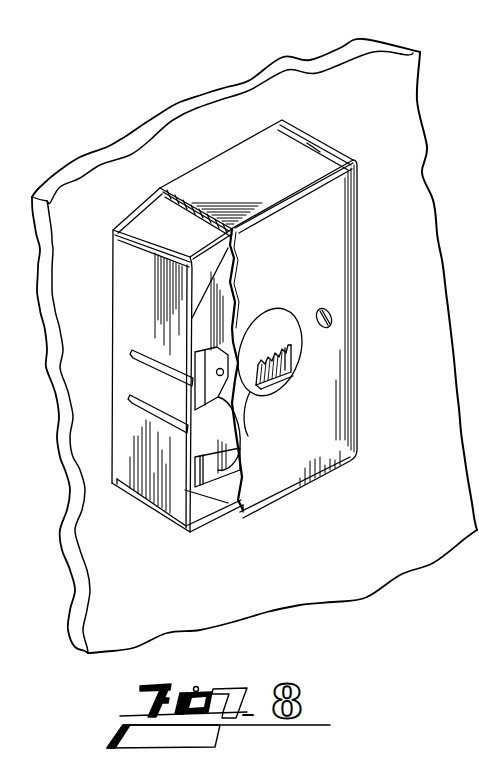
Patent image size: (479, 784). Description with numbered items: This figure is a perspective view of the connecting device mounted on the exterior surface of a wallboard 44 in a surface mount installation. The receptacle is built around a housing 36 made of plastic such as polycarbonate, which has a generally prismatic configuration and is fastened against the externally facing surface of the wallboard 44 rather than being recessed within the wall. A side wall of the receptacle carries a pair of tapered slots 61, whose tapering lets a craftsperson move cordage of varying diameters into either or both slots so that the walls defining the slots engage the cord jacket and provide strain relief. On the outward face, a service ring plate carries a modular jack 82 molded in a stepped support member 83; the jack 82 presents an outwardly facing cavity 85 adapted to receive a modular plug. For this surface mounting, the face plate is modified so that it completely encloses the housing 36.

The housing 36 is at (138, 210).
The wallboard 44 is at (403, 93).
The tapered slots 61 is at (160, 362).
The modular jack 82 is at (273, 333).
The stepped support member 83 is at (248, 436).
The outwardly facing cavity 85 is at (288, 358).